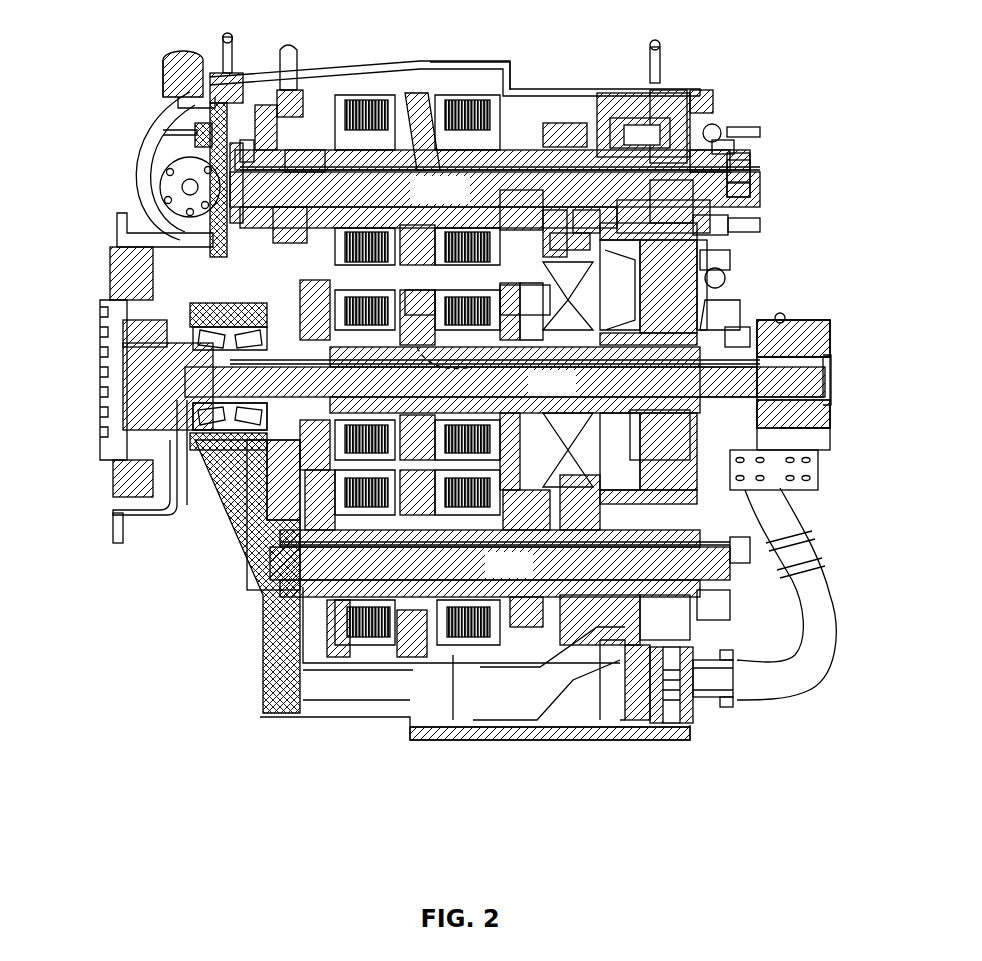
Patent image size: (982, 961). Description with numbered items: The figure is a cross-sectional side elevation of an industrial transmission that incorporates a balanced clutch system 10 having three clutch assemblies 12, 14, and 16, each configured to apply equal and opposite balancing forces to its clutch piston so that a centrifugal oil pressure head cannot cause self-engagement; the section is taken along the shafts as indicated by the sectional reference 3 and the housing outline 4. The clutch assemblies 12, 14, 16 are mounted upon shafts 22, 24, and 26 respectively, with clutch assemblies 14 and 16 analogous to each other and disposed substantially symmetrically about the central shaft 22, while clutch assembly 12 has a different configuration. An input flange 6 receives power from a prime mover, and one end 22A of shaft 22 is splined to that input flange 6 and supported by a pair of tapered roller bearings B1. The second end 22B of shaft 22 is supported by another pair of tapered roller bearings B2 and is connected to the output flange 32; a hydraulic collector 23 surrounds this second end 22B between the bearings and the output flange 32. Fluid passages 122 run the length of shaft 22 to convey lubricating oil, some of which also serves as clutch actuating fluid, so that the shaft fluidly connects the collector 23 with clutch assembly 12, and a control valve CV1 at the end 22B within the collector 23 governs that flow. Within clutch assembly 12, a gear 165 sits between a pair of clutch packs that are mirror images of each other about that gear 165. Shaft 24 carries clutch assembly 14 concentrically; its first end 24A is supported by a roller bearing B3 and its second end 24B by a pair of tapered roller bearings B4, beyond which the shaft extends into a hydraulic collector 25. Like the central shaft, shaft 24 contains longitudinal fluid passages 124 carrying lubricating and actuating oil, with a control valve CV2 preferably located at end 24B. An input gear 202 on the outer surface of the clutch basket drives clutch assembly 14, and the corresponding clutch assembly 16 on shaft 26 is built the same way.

The lubrication passage 3 is at (473, 367).
The transmission housing 4 is at (443, 97).
The input flange 6 is at (123, 280).
The balanced clutch system 10 is at (507, 300).
The clutch assembly 12 is at (255, 420).
The clutch assembly 14 is at (408, 100).
The clutch assembly 16 is at (360, 637).
The shaft 22 is at (570, 396).
The end of shaft 22A is at (213, 382).
The second end of shaft 22B is at (718, 380).
The hydraulic collector 23 is at (737, 333).
The shaft 24 is at (436, 201).
The first end of shaft 24A is at (300, 160).
The second end of shaft 24B is at (693, 153).
The hydraulic collector 25 is at (723, 150).
The shaft 26 is at (527, 581).
The output flange 32 is at (800, 327).
The fluid passages 122 is at (763, 363).
The fluid passages 124 is at (727, 178).
The gear 165 is at (412, 295).
The input gear 202 is at (437, 97).
The tapered roller bearings B1 is at (230, 420).
The tapered roller bearings B2 is at (690, 455).
The roller bearing B3 is at (244, 148).
The tapered roller bearings B4 is at (660, 135).
The control valve CV1 is at (777, 407).
The control valve CV2 is at (750, 198).